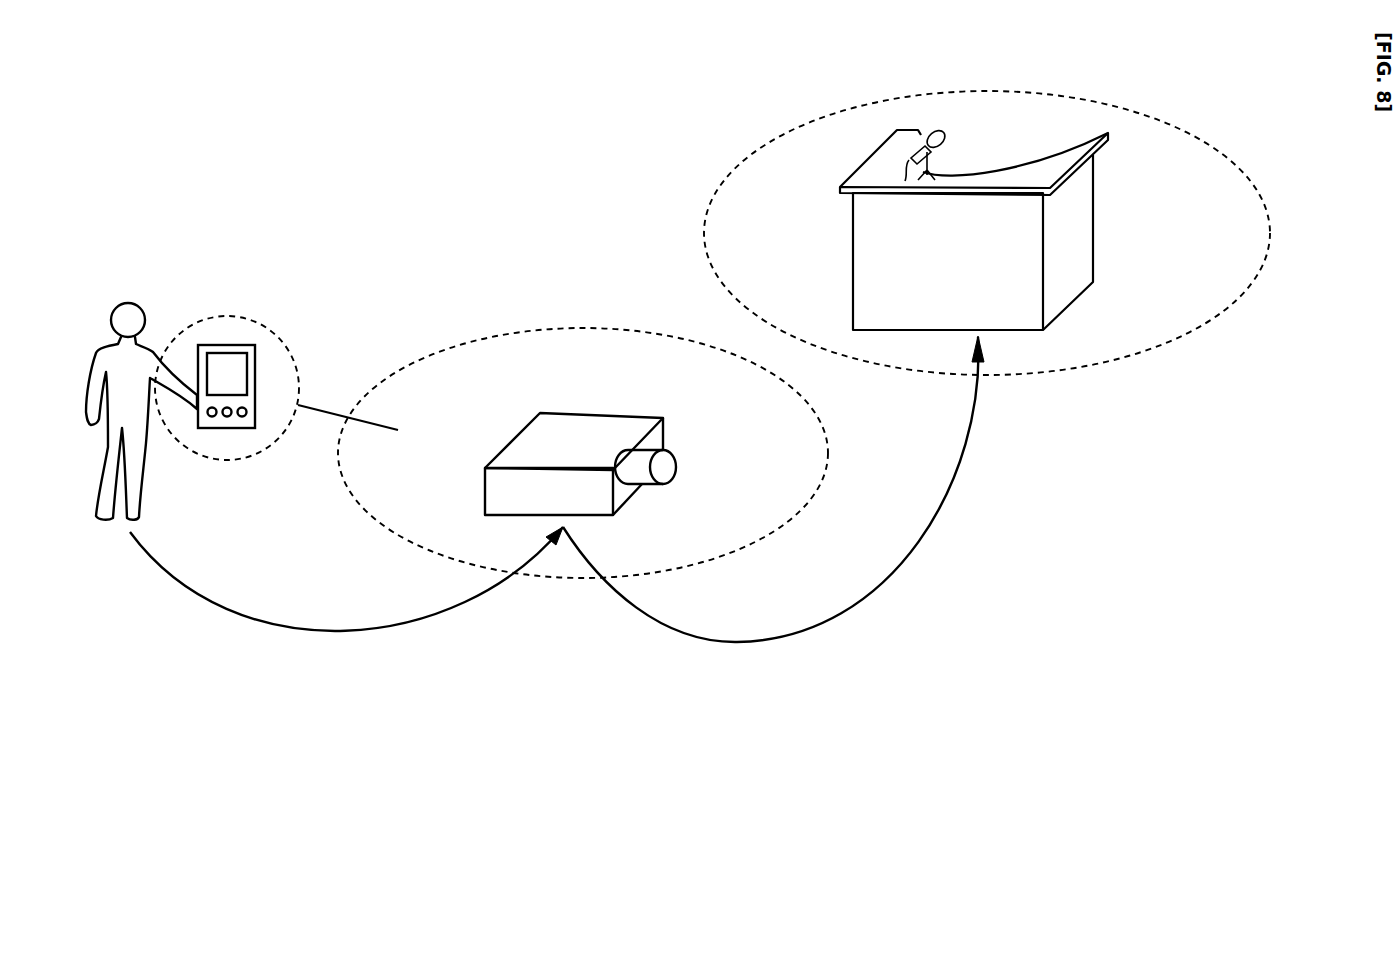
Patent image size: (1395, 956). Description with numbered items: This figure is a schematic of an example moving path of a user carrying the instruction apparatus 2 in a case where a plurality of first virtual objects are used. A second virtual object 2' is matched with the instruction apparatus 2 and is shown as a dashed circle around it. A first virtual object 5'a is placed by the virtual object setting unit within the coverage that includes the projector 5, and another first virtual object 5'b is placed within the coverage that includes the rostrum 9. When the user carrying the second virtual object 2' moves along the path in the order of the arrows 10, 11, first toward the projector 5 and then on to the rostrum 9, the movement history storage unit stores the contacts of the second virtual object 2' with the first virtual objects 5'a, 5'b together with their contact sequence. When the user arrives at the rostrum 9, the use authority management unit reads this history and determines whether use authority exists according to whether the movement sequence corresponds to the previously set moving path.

The instruction apparatus 2 is at (270, 385).
The second virtual object 2' is at (236, 364).
The projector 5 is at (580, 429).
The first virtual object 5'a is at (583, 419).
The first virtual object 5'b is at (993, 232).
The rostrum 9 is at (1077, 235).
The arrow 10 is at (342, 632).
The arrow 11 is at (917, 545).